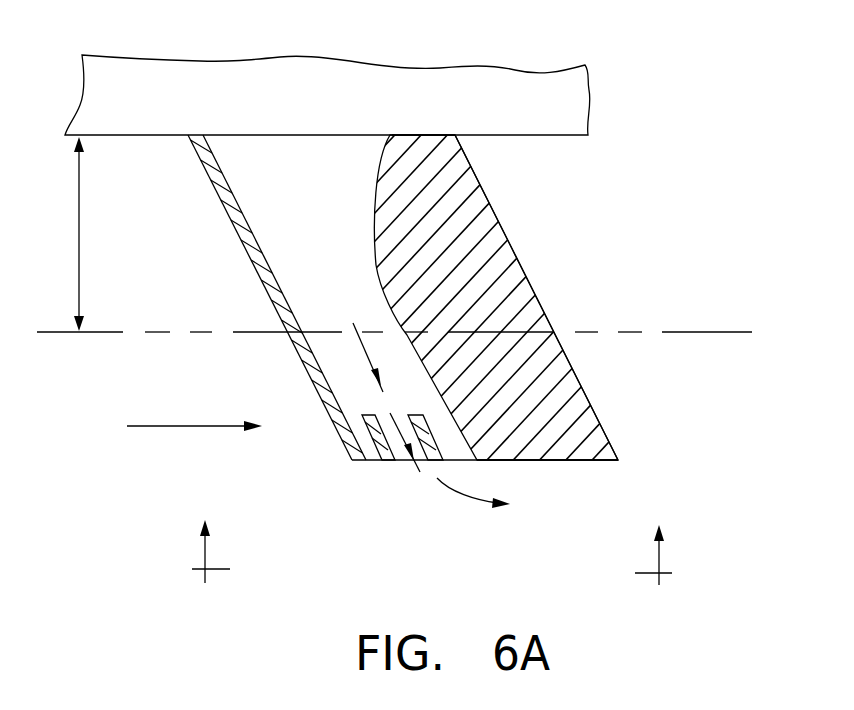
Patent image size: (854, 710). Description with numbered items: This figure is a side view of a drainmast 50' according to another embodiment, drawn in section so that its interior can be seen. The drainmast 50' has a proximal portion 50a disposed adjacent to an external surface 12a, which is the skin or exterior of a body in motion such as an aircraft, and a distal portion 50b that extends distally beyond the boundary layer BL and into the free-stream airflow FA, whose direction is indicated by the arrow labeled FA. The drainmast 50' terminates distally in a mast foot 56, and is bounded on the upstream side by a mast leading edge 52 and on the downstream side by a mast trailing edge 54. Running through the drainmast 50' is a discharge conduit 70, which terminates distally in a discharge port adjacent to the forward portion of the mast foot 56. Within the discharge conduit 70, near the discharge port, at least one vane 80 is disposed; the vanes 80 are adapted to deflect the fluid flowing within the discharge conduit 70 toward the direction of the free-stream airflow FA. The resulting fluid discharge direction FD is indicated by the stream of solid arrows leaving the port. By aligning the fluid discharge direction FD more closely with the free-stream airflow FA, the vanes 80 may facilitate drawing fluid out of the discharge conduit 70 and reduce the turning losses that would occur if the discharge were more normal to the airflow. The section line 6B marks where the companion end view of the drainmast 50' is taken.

The external surface 12a is at (578, 150).
The discharge conduit 70 is at (322, 212).
The mast leading edge 52 is at (300, 375).
The drainmast 50' is at (468, 297).
The proximal portion 50a is at (440, 147).
The mast trailing edge 54 is at (556, 279).
The distal portion 50b is at (555, 432).
The mast foot 56 is at (545, 473).
The vane 80 is at (452, 451).
The boundary layer BL is at (80, 237).
The free-stream airflow FA is at (197, 425).
The fluid discharge direction FD is at (458, 498).
The section line 6B- 6B is at (428, 569).